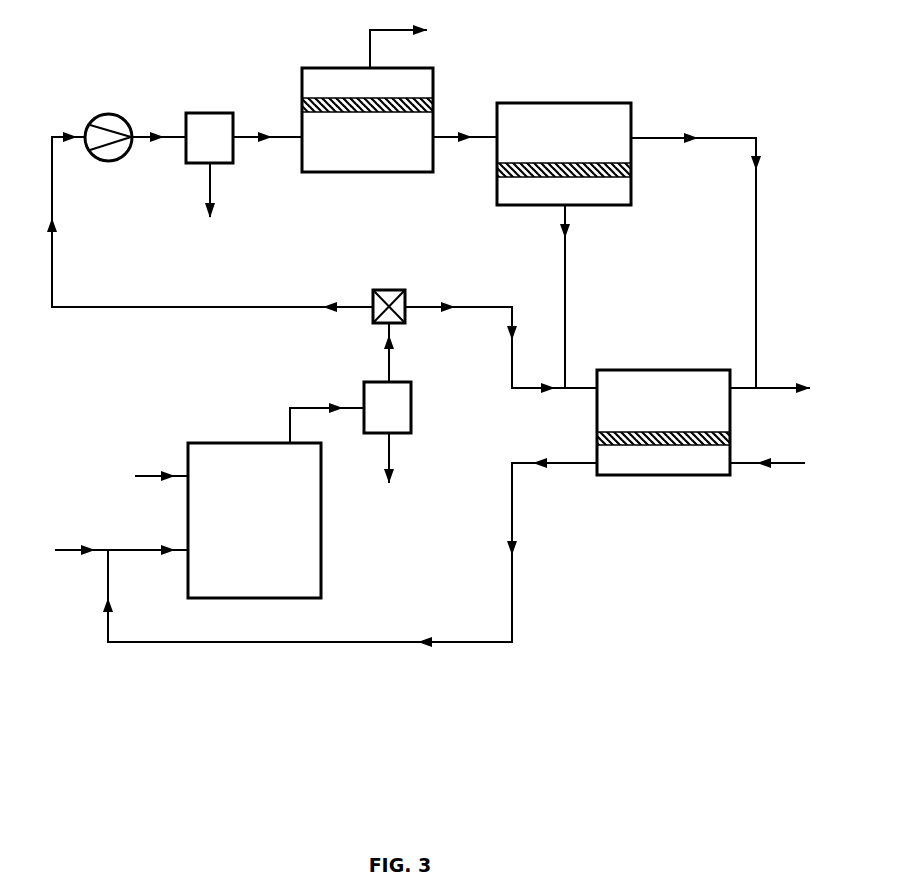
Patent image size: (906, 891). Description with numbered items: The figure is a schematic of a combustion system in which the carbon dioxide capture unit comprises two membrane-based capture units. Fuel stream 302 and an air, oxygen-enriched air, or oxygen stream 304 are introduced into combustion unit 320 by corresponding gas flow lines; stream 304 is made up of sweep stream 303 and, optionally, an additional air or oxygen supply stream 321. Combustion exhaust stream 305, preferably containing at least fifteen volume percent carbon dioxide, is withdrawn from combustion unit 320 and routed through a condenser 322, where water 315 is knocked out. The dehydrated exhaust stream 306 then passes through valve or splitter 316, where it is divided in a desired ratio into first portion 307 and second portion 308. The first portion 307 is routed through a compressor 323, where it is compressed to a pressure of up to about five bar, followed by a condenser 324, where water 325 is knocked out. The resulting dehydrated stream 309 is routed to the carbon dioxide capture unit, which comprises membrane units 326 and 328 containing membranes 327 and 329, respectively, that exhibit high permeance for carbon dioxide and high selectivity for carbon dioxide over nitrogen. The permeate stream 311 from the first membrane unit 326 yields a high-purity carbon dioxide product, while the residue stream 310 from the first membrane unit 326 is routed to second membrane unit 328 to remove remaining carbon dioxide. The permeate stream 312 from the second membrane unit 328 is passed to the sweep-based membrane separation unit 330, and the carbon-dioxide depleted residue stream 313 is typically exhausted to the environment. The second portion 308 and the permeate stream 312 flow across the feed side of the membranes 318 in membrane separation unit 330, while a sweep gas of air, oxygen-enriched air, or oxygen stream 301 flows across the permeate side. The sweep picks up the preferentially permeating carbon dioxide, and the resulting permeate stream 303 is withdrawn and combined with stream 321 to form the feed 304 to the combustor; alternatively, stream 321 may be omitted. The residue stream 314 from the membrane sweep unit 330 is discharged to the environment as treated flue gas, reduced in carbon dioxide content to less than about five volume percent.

The sweep gas stream 301 is at (775, 474).
The fuel stream 302 is at (139, 476).
The sweep stream 303 is at (350, 563).
The air or oxygen stream 304 is at (148, 539).
The combustion exhaust stream 305 is at (326, 412).
The dehydrated exhaust stream 306 is at (411, 352).
The first portion 307 is at (210, 233).
The second portion 308 is at (482, 305).
The dehydrated stream 309 is at (267, 153).
The residue stream 310 is at (465, 153).
The permeate stream 311 is at (417, 43).
The permeate stream 312 is at (585, 296).
The carbon-dioxide depleted residue stream 313 is at (696, 260).
The residue stream 314 is at (775, 377).
The water 315 is at (390, 474).
The valve or splitter 316 is at (392, 290).
The membranes 318 is at (730, 435).
The combustion unit 320 is at (218, 443).
The additional air or oxygen supply stream 321 is at (70, 539).
The condenser 322 is at (411, 405).
The compressor 323 is at (112, 113).
The condenser 324 is at (205, 113).
The water 325 is at (212, 205).
The first membrane unit 326 is at (351, 105).
The membrane 327 is at (433, 101).
The second membrane unit 328 is at (606, 142).
The membrane 329 is at (632, 166).
The membrane separation unit 330 is at (708, 391).